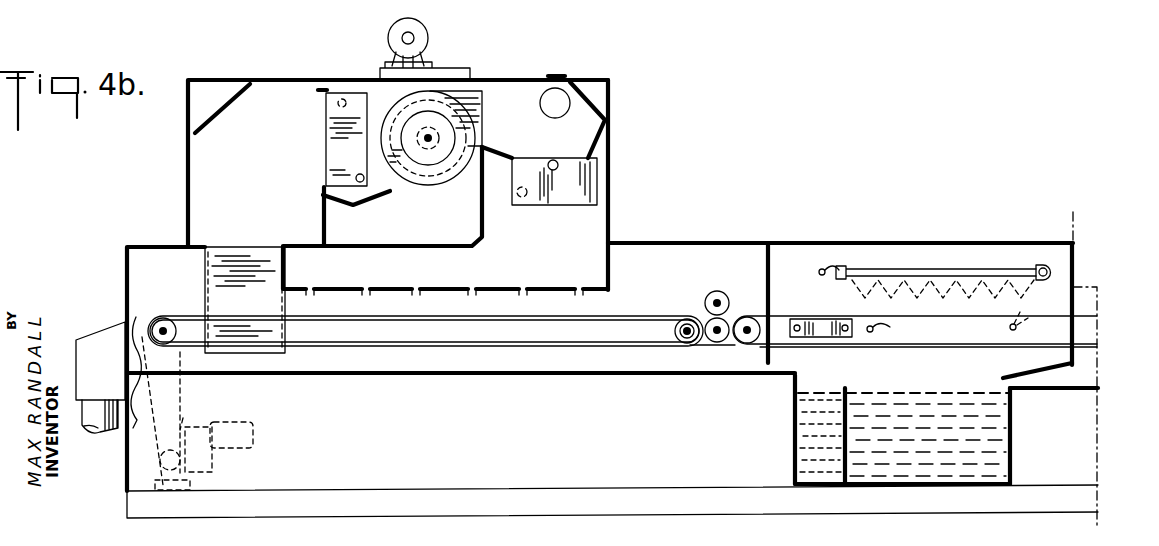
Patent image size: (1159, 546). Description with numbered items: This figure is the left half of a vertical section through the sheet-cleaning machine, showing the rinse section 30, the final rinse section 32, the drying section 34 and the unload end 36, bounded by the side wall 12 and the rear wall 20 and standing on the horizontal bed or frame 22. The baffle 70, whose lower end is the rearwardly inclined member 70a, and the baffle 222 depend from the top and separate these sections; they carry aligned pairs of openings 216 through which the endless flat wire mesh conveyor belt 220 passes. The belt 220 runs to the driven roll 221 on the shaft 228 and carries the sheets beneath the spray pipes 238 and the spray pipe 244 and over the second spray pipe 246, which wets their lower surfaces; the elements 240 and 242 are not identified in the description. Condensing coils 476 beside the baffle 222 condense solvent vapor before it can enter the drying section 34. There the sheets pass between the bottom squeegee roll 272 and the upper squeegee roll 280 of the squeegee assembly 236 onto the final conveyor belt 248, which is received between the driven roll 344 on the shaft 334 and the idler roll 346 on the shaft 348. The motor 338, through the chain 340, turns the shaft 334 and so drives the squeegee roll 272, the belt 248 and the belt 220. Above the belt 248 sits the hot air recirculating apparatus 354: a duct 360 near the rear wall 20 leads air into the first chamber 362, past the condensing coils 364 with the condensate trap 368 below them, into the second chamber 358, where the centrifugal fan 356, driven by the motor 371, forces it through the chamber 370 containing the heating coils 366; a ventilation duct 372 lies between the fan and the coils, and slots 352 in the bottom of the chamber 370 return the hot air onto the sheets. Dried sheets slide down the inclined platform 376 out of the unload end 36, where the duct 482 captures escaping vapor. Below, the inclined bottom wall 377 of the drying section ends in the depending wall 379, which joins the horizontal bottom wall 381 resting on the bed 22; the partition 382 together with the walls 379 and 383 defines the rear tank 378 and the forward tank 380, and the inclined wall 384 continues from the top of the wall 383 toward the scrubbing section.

The side wall 12 is at (665, 260).
The rear wall 20 is at (126, 440).
The horizontal bed or frame 22 is at (500, 511).
The rinse section 30 is at (966, 255).
The final rinse section 32 is at (802, 258).
The drying section 34 is at (632, 265).
The unload end 36 is at (107, 328).
The baffle 70 is at (1074, 262).
The member 70a is at (1008, 372).
The openings 216 is at (770, 308).
The conveyor belt 220 is at (1040, 313).
The driven roll 221 is at (738, 342).
The baffle 222 is at (771, 253).
The shaft 228 is at (746, 316).
The squeegee assembly 236 is at (699, 296).
The spray pipes 238 is at (942, 258).
The pipe end fitting 240 is at (1038, 266).
The nozzle 242 is at (1010, 327).
The spray pipe 244 is at (824, 270).
The second spray pipe 246 is at (881, 326).
The final endless conveyor belt 248 is at (611, 317).
The bottom squeegee roll 272 is at (700, 343).
The upper squeegee roll 280 is at (714, 291).
The shaft 334 is at (168, 327).
The motor 338 is at (213, 470).
The chain 340 is at (183, 418).
The driven roll 344 is at (163, 317).
The idler roll 346 is at (684, 318).
The shaft 348 is at (676, 330).
The slots 352 is at (359, 313).
The hot air recirculating apparatus 354 is at (305, 78).
The centrifugal fan 356 is at (462, 163).
The intermediate or second chamber 358 is at (416, 224).
The duct 360 is at (245, 257).
The first chamber 362 is at (262, 163).
The condensing coils 364 is at (345, 113).
The heating coils 366 is at (548, 205).
The condensate trap 368 is at (352, 206).
The chamber 370 is at (525, 265).
The motor 371 is at (426, 33).
The ventilation duct 372 is at (549, 98).
The platform 376 is at (137, 323).
The bottom wall 377 is at (500, 376).
The rear tank 378 is at (812, 426).
The transverse wall 379 is at (800, 396).
The forward tank 380 is at (980, 455).
The horizontal bottom wall 381 is at (880, 484).
The upstanding transverse partition 382 is at (850, 407).
The upstanding wall 383 is at (1011, 430).
The wall 384 is at (1080, 389).
The condensing coils 476 is at (830, 304).
The duct 482 is at (88, 427).